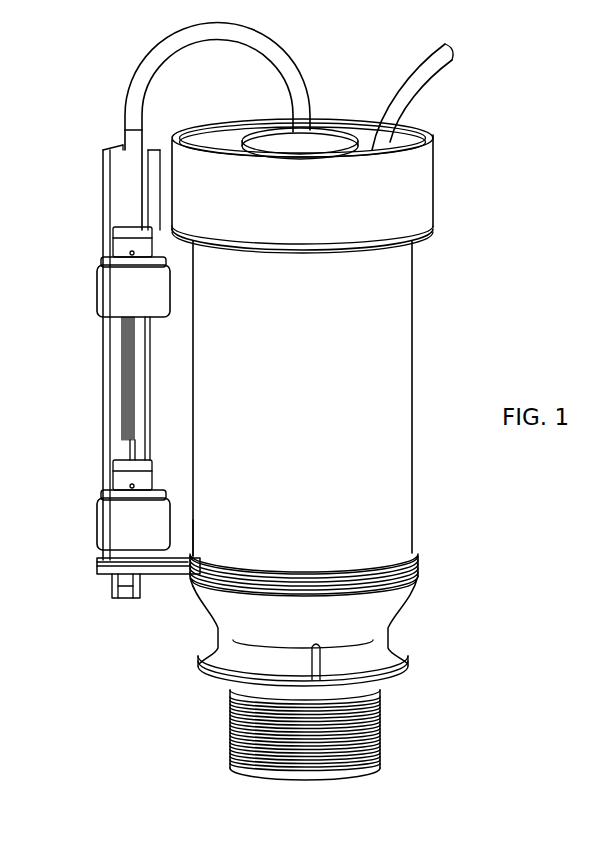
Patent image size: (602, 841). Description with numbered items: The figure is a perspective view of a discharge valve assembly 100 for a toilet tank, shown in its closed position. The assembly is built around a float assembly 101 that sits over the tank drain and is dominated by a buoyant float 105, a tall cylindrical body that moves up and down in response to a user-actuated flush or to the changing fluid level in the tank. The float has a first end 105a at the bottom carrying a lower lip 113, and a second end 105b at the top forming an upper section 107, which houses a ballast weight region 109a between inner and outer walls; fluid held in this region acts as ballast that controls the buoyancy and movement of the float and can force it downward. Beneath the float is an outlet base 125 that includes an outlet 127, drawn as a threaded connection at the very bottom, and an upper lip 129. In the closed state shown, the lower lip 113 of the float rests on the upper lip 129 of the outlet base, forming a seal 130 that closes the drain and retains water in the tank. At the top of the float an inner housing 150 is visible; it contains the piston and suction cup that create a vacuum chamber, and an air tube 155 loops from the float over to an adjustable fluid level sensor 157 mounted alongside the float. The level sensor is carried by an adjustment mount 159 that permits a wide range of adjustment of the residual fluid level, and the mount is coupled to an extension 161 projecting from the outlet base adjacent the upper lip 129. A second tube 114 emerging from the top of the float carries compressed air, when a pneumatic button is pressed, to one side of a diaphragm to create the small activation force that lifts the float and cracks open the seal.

The discharge valve assembly 100 is at (483, 130).
The float assembly 101 is at (425, 386).
The float 105 is at (398, 348).
The first end 105a is at (385, 513).
The second end 105b is at (424, 193).
The upper section 107 is at (420, 222).
The ballast weight region 109a is at (424, 140).
The lower lip 113 is at (410, 552).
The tube 114 is at (413, 62).
The outlet base 125 is at (387, 622).
The outlet 127 is at (330, 781).
The upper lip 129 is at (416, 568).
The seal 130 is at (410, 559).
The inner housing 150 is at (330, 134).
The air tube 155 is at (143, 73).
The adjustable fluid level sensor 157 is at (113, 266).
The adjustment mount 159 is at (113, 338).
The extension 161 is at (173, 584).